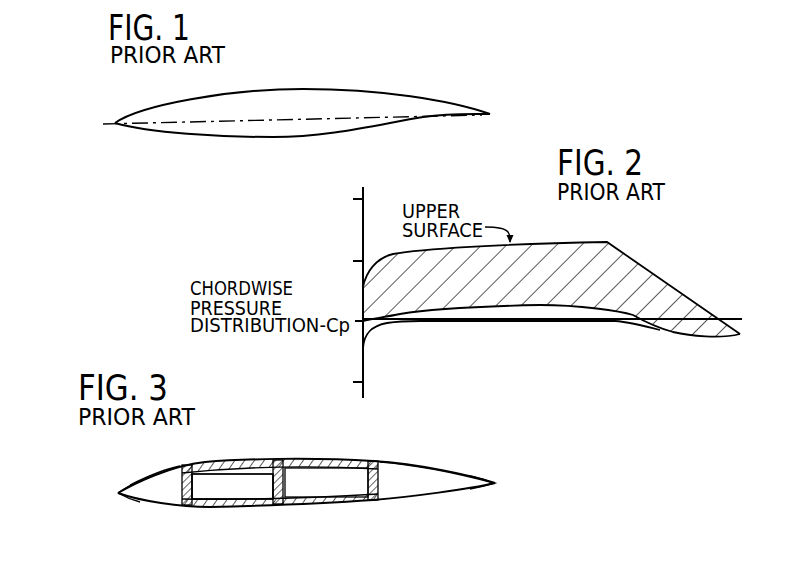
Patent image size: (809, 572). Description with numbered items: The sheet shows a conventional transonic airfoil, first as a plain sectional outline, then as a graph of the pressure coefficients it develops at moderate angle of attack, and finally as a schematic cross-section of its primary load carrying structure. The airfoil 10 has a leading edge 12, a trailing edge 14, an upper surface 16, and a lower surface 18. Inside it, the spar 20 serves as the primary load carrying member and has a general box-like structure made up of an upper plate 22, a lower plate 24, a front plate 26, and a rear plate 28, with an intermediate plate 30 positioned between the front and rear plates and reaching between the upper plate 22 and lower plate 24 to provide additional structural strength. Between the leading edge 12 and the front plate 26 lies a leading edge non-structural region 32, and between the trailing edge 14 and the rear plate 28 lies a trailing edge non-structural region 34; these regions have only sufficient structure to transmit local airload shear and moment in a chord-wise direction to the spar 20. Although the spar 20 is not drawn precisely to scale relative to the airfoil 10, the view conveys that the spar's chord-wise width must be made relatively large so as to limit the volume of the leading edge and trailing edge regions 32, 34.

The airfoil 10 is at (171, 460).
The leading edge 12 is at (120, 493).
The trailing edge 14 is at (496, 483).
The upper surface 16 is at (337, 462).
The lower surface 18 is at (337, 502).
The spar 20 is at (256, 511).
The upper plate 22 is at (300, 462).
The lower plate 24 is at (313, 508).
The front plate 26 is at (183, 492).
The rear plate 28 is at (380, 480).
The intermediate plate 30 is at (274, 487).
The leading edge non-structural region 32 is at (153, 478).
The trailing edge non-structural region 34 is at (398, 473).